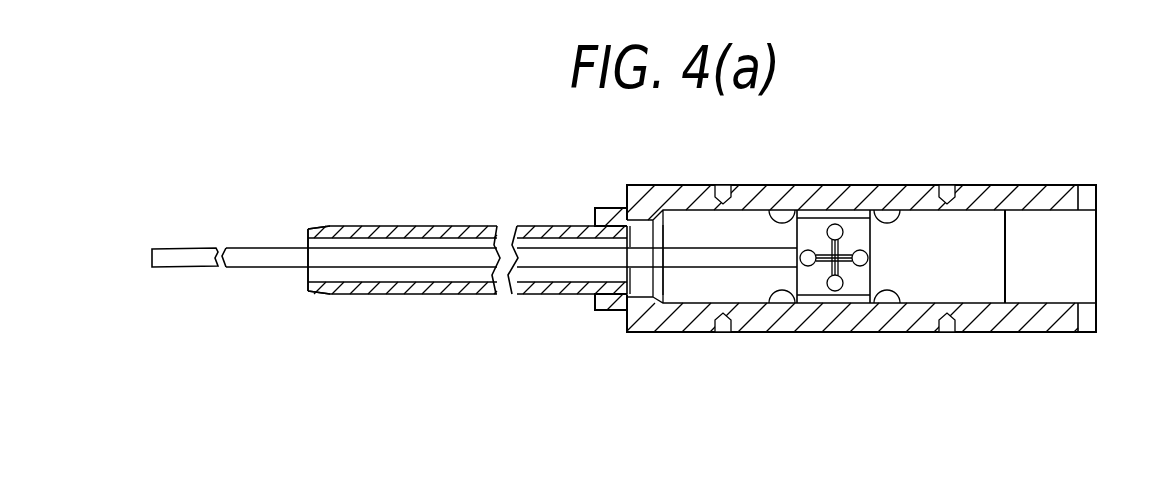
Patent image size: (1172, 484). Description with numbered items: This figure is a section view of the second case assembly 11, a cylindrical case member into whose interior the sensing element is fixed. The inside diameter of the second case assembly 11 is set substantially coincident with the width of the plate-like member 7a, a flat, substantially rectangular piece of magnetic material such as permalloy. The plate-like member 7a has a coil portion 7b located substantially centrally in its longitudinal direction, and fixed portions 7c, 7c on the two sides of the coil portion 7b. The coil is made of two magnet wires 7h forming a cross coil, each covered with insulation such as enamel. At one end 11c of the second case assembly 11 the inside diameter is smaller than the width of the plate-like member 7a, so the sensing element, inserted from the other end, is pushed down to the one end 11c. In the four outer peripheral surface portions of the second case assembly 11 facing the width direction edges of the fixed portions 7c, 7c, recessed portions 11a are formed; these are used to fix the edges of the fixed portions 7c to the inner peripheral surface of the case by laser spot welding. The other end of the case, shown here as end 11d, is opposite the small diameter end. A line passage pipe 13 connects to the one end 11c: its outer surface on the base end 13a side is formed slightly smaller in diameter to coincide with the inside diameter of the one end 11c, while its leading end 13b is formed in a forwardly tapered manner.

The second case assembly 11 is at (804, 164).
The recessed portions 11a is at (726, 185).
The one end 11c is at (597, 212).
The end cap of housing 11d is at (1097, 198).
The plate-like member 7a is at (1006, 280).
The coil portion 7b is at (860, 290).
The fixed portions 7c is at (678, 215).
The magnet wires 7h is at (270, 248).
The line passage pipe 13 is at (428, 296).
The base end 13a is at (620, 292).
The leading end 13b is at (330, 296).